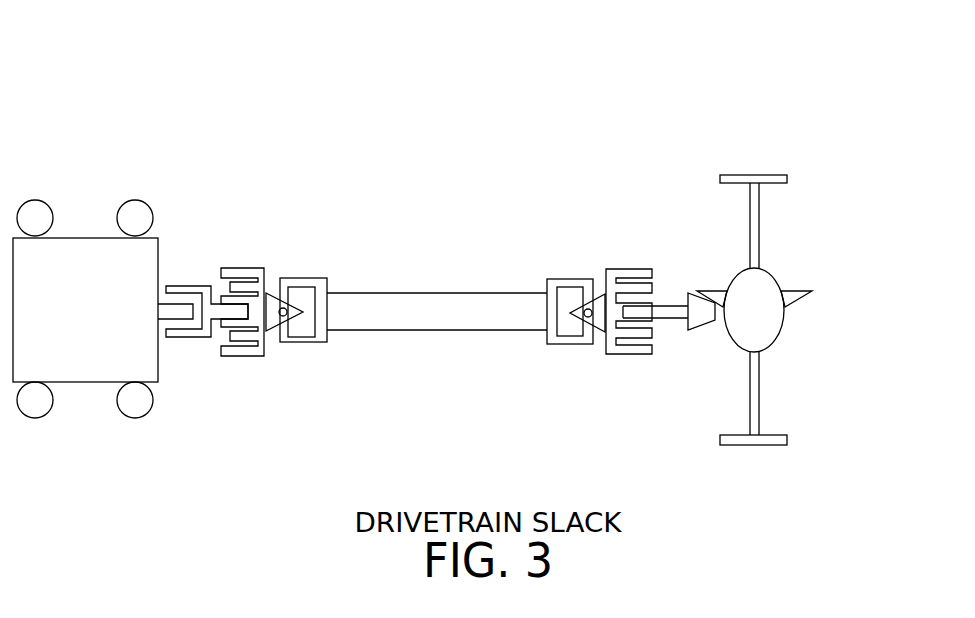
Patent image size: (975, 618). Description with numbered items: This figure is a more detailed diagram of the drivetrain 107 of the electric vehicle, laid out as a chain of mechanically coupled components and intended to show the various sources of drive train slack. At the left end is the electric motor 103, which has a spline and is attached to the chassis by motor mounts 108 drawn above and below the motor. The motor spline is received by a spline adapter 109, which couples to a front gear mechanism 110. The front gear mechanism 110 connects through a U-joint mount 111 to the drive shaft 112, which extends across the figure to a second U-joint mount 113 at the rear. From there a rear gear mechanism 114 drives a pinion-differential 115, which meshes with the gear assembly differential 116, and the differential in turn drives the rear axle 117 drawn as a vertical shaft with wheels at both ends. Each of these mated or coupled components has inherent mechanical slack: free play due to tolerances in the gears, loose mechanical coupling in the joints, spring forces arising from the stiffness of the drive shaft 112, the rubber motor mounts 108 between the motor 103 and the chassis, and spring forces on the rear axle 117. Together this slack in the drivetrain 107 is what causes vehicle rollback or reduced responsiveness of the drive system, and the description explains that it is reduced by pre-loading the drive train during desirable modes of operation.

The electric motor 103 is at (69, 353).
The drivetrain 107 is at (392, 89).
The motor mounts 108 is at (85, 443).
The spline adapter 109 is at (182, 286).
The front gear mechanism 110 is at (247, 357).
The U-joint mount 111 is at (268, 293).
The drive shaft 112 is at (440, 331).
The U-joint mount 113 is at (602, 292).
The rear gear mechanism 114 is at (630, 357).
The pinion-differential 115 is at (681, 300).
The gear assembly differential 116 is at (780, 282).
The rear axle 117 is at (759, 237).